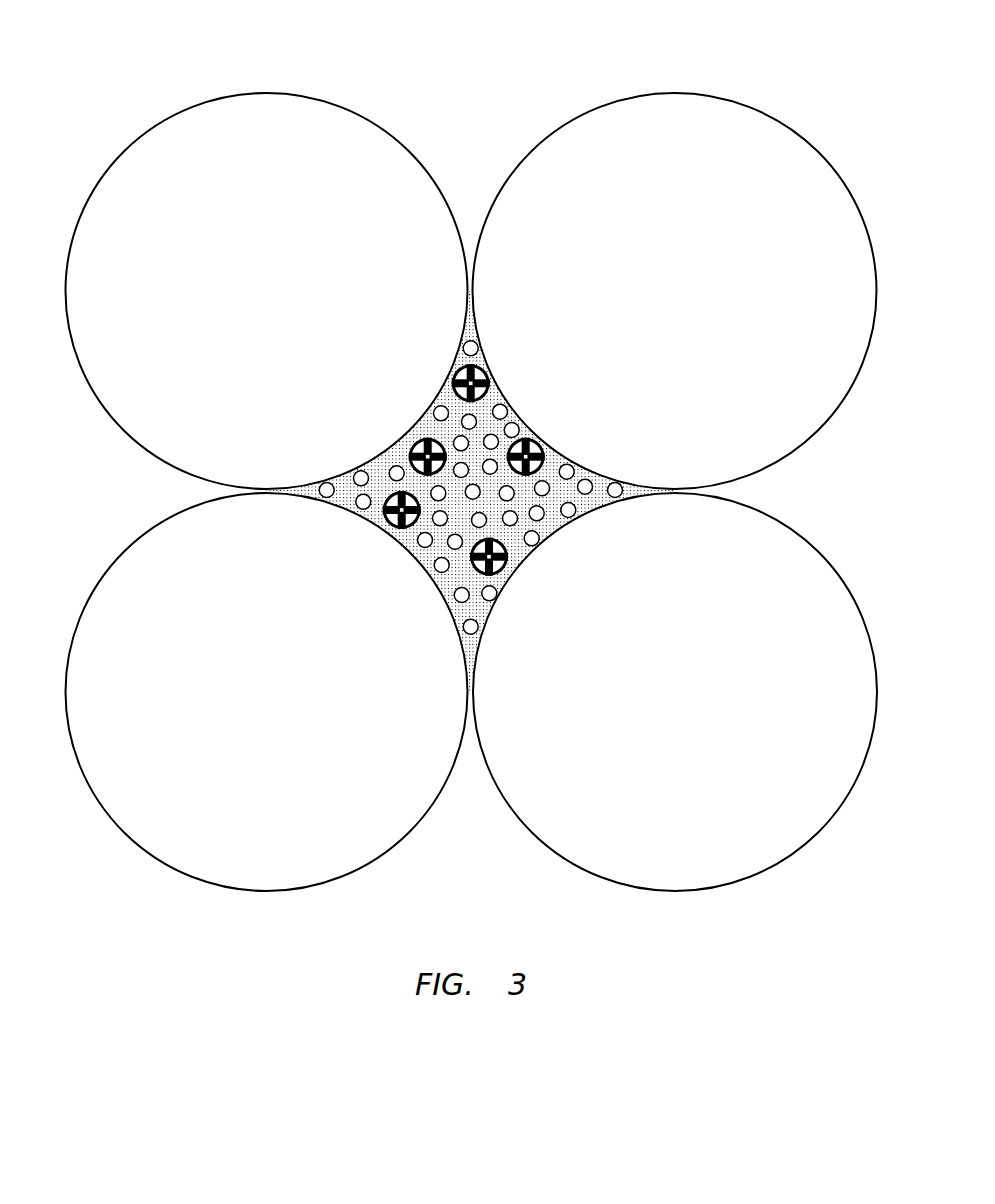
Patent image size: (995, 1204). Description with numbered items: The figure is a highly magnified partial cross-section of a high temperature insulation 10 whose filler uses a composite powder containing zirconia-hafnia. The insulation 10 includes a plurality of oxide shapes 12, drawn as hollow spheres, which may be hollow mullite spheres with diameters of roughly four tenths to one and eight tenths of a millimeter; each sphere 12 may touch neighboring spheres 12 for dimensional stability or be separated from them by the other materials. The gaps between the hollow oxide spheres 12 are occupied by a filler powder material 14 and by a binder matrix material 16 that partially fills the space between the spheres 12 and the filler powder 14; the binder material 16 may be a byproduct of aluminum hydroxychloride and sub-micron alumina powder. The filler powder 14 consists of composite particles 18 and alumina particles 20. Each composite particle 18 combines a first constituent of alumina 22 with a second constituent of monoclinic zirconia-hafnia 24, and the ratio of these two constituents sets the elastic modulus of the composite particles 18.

The high temperature insulation 10 is at (472, 461).
The oxide shapes 12 is at (540, 140).
The filler powder material 14 is at (507, 418).
The binder matrix material 16 is at (548, 527).
The composite particles 18 is at (413, 473).
The alumina particles 20 is at (615, 490).
The alumina 22 is at (390, 520).
The monoclinic zirconia-hafnia 24 is at (400, 530).